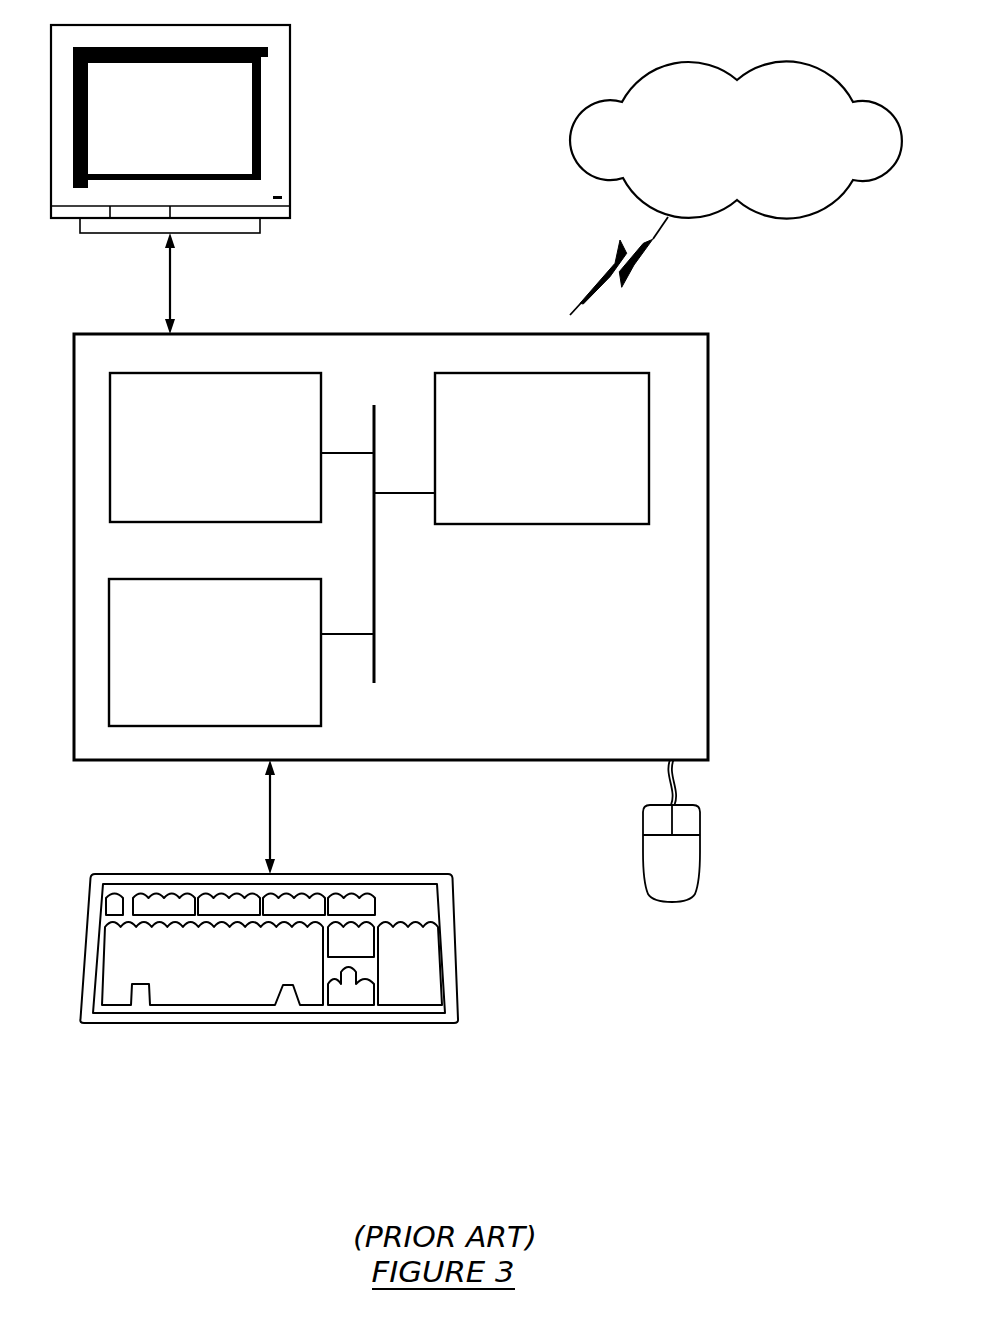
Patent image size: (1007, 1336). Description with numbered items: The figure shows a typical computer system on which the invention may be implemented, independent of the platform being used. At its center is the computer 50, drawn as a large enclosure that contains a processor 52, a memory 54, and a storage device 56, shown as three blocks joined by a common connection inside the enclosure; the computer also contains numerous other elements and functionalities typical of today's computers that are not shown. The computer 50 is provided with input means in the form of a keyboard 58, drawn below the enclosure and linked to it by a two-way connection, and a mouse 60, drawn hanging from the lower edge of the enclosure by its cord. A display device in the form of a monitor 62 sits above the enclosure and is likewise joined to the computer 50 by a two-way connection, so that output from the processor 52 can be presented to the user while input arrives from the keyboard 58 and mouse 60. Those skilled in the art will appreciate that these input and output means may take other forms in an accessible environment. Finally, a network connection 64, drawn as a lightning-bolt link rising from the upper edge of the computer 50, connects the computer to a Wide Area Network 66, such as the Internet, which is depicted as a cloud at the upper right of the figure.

The computer 50 is at (742, 586).
The processor 52 is at (543, 462).
The memory 54 is at (200, 460).
The storage device 56 is at (196, 665).
The keyboard 58 is at (179, 972).
The mouse 60 is at (686, 875).
The monitor 62 is at (155, 126).
The network connection 64 is at (612, 255).
The Wide Area Network (WAN) 66 is at (720, 63).